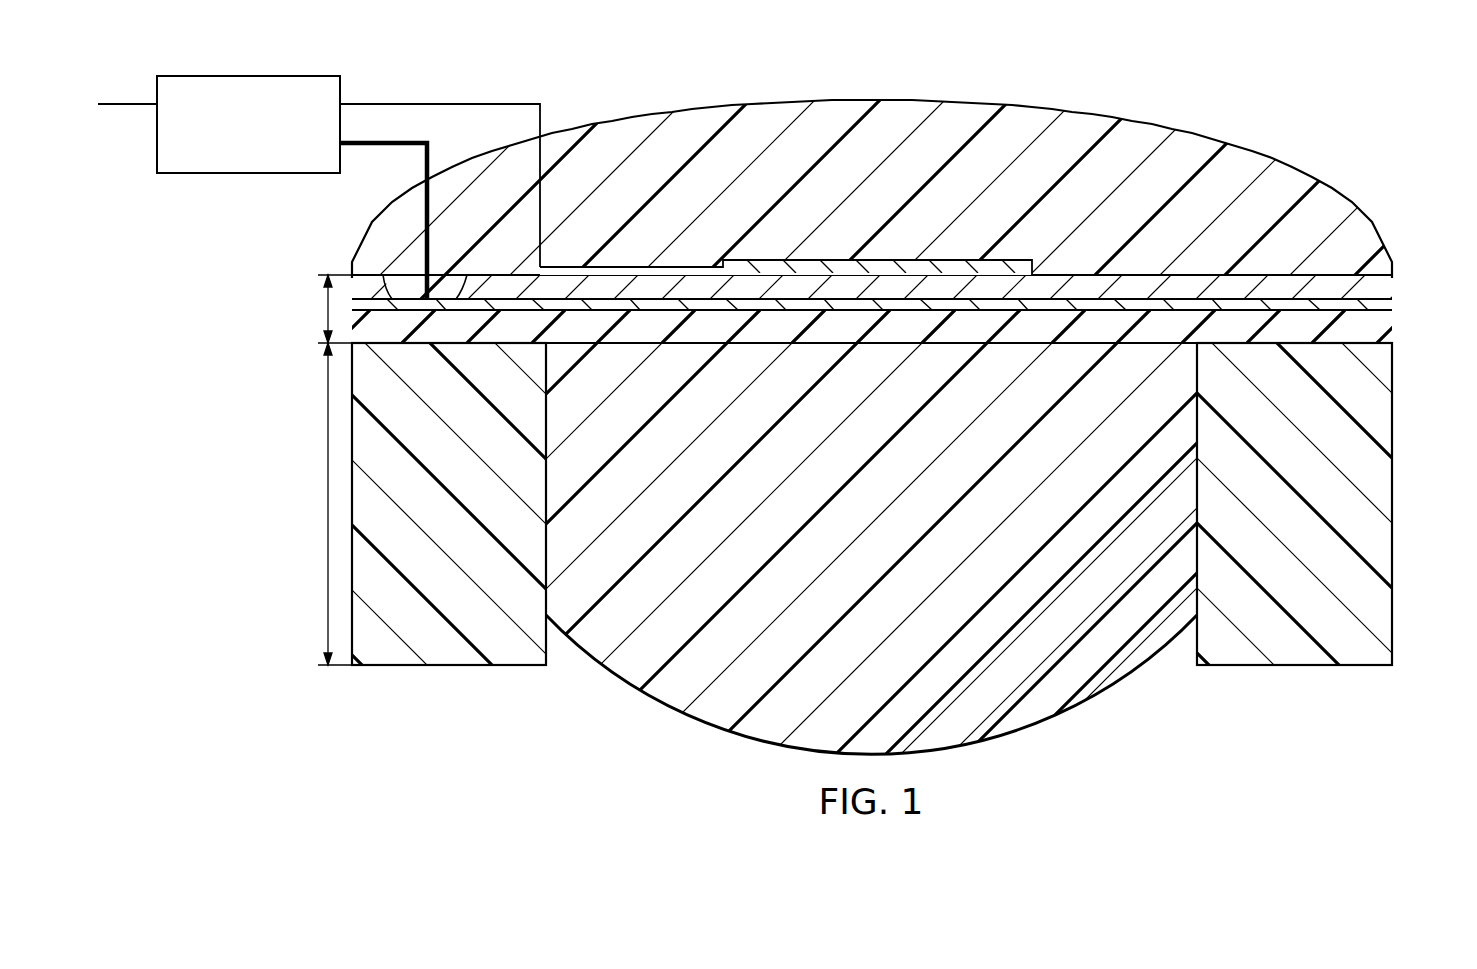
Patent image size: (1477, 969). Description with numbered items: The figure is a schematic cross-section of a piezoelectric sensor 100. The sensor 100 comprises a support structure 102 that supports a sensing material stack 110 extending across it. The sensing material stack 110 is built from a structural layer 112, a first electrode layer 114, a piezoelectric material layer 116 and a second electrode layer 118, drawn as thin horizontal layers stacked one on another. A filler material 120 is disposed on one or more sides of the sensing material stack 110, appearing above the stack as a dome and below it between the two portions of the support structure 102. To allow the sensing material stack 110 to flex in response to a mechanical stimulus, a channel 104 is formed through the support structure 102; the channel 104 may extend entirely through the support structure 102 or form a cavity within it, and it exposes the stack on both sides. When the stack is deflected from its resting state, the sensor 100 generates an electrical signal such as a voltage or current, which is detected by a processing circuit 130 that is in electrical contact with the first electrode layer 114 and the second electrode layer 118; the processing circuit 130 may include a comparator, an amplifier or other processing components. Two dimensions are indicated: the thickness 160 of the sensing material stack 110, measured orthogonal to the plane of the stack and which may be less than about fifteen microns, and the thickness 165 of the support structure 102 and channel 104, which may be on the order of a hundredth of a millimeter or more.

The piezoelectric sensor 100 is at (1133, 70).
The support structure 102 is at (448, 656).
The channel 104 is at (556, 620).
The sensing material stack 110 is at (1405, 277).
The structural layer 112 is at (855, 345).
The first electrode layer 114 is at (1003, 313).
The piezoelectric material layer 116 is at (1055, 292).
The second electrode layer 118 is at (843, 268).
The filler material 120 is at (955, 115).
The processing circuit 130 is at (247, 75).
The thickness of the sensing material stack 160 is at (318, 300).
The thickness of the support structure 165 is at (318, 521).